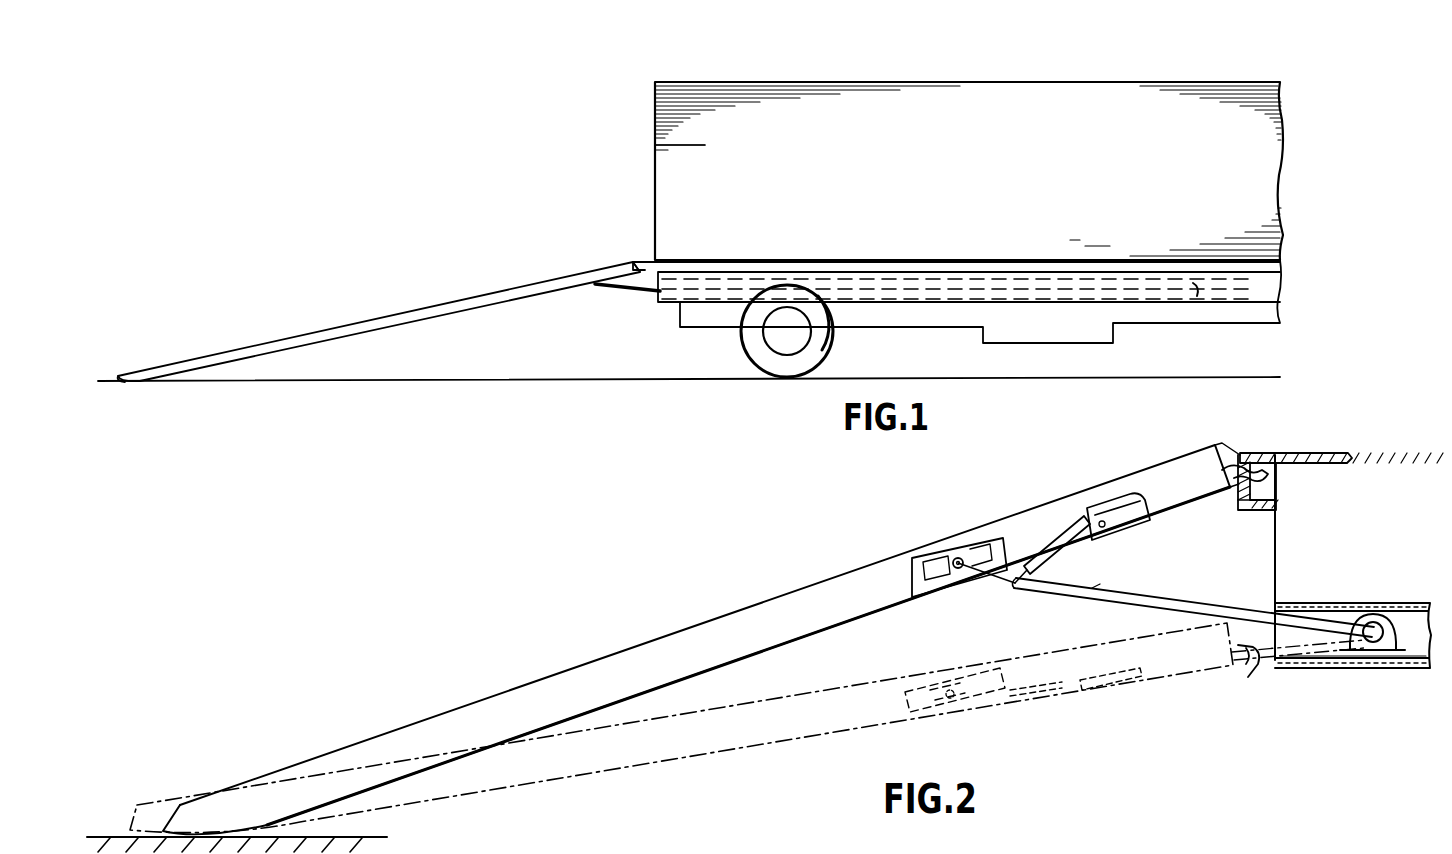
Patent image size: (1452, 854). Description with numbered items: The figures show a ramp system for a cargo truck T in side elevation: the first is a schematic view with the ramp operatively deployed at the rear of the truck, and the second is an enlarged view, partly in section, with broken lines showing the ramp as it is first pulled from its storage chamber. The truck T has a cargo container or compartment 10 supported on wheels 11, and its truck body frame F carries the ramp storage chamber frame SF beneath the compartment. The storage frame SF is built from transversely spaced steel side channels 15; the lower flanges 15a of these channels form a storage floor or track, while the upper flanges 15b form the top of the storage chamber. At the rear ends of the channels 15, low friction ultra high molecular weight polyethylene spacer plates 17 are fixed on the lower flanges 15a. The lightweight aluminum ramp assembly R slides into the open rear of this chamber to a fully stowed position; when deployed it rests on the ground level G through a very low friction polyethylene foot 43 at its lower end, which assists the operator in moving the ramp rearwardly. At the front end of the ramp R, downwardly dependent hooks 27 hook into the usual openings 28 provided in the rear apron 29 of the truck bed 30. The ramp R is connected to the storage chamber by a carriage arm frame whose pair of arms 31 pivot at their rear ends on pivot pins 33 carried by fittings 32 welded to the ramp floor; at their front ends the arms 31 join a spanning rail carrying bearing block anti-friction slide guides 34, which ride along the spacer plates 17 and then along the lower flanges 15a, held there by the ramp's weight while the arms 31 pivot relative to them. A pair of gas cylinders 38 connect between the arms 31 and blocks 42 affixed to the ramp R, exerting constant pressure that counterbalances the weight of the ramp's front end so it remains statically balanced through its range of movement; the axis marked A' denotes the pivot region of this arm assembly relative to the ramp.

In FIG. 1, the truck T is at (1078, 74).
In FIG. 1, the cargo container or compartment 10 is at (650, 146).
In FIG. 1, the truck body frame F is at (656, 319).
In FIG. 1, the ramp storage chamber frame SF is at (917, 301).
In FIG. 1, the wheels 11 is at (832, 331).
In FIG. 1, the ramp assembly R is at (404, 305).
In FIG. 2, the ramp assembly R is at (801, 587).
In FIG. 1, the arms 31 is at (628, 288).
In FIG. 2, the arms 31 is at (1076, 591).
In FIG. 1, the ground level G is at (340, 380).
In FIG. 2, the ground level G is at (107, 835).
In FIG. 1, the foot 43 is at (122, 383).
In FIG. 2, the side channels 15 is at (1404, 620).
In FIG. 2, the lower flanges 15a is at (1408, 670).
In FIG. 2, the upper flanges 15b is at (1357, 603).
In FIG. 2, the spacer plates 17 is at (1320, 658).
In FIG. 2, the slide guides 34 is at (1375, 652).
In FIG. 2, the truck body floor plate or bed 30 is at (1335, 455).
In FIG. 2, the openings 28 is at (1244, 458).
In FIG. 2, the rear apron 29 is at (1238, 506).
In FIG. 2, the hooks 27 is at (1278, 472).
In FIG. 2, the fittings 32 is at (940, 592).
In FIG. 2, the pivot pins 33 is at (956, 556).
In FIG. 2, the gas cylinders 38 is at (1062, 536).
In FIG. 2, the blocks 42 is at (1140, 528).
In FIG. 2, the pivot axis A' is at (1126, 571).